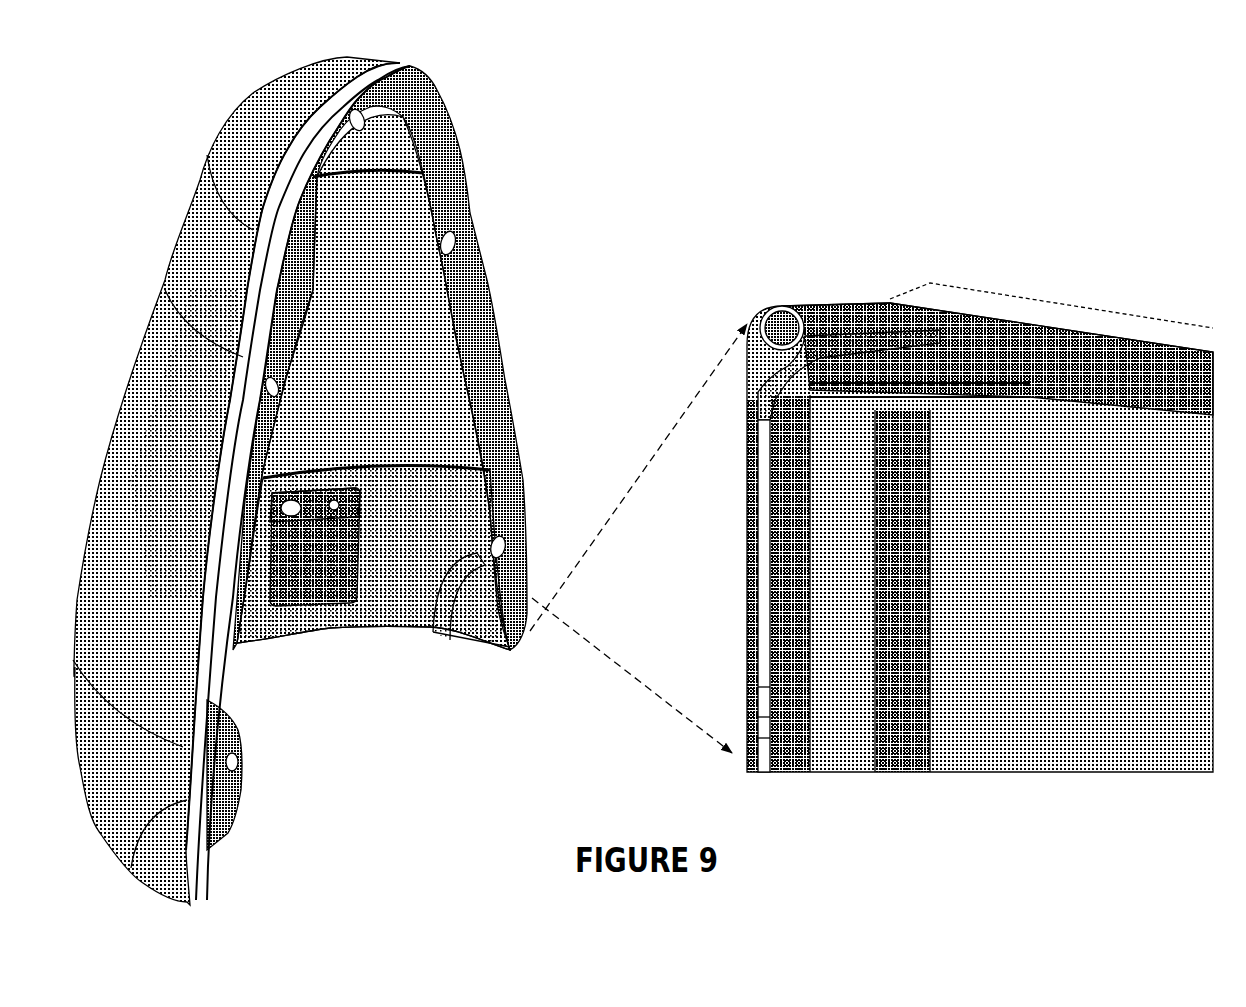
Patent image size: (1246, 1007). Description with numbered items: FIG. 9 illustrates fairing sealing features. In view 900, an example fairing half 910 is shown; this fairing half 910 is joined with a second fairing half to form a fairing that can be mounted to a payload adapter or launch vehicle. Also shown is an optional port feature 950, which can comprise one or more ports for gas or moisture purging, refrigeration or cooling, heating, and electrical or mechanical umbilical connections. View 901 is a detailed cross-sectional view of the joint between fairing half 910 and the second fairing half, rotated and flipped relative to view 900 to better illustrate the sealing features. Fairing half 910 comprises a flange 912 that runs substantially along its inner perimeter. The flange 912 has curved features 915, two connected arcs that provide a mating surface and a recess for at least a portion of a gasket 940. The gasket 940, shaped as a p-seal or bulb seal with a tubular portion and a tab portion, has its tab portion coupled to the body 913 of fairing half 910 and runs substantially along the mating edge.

The view 900 is at (113, 112).
The fairing half 910 is at (181, 233).
The flange 912 is at (467, 289).
The body 913 is at (1082, 305).
The curved features 915 is at (773, 393).
The gasket 940 is at (841, 297).
The port feature 950 is at (317, 560).
The view 901 is at (777, 267).